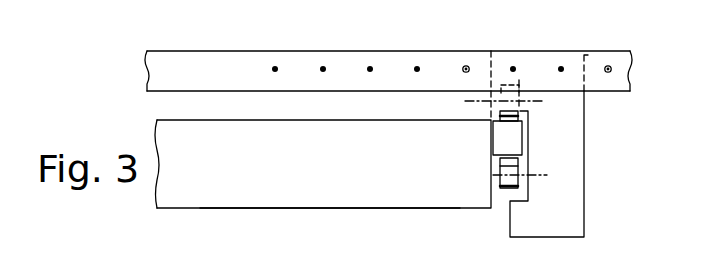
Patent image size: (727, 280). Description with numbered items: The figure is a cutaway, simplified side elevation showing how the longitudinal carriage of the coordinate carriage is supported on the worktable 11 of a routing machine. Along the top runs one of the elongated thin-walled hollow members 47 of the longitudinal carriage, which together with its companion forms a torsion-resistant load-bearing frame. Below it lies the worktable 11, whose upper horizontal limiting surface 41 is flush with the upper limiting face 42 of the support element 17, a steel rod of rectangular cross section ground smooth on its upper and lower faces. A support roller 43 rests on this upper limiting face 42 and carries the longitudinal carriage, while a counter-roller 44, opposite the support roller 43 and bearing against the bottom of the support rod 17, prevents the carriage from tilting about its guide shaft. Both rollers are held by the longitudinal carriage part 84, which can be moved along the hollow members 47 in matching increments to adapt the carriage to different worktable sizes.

The hollow member 47 is at (397, 63).
The support roller 43 is at (506, 87).
The upper limiting face 42 is at (496, 118).
The support element 17 is at (500, 140).
The counter-roller 44 is at (505, 192).
The longitudinal carriage part 84 is at (573, 138).
The upper horizontal limiting surface 41 is at (263, 120).
The worktable 11 is at (289, 198).